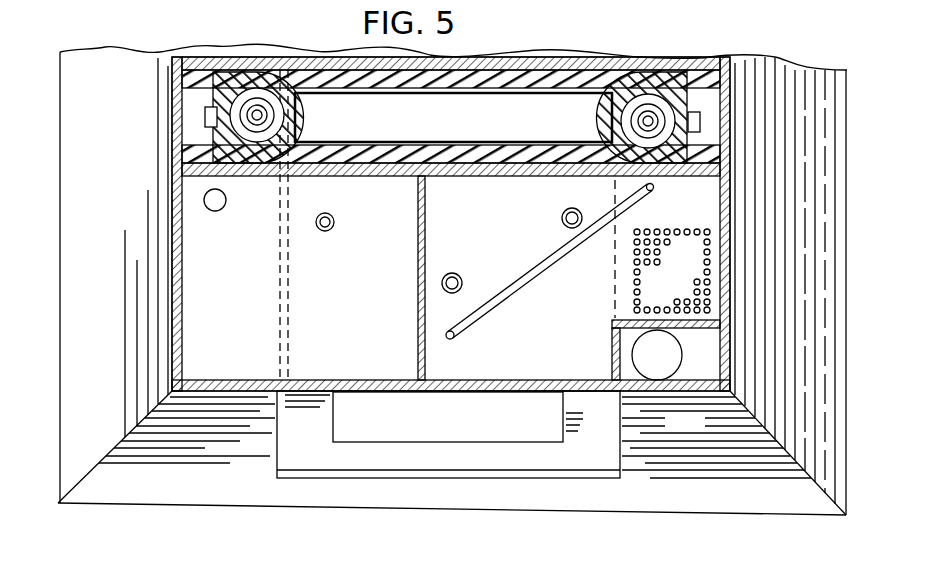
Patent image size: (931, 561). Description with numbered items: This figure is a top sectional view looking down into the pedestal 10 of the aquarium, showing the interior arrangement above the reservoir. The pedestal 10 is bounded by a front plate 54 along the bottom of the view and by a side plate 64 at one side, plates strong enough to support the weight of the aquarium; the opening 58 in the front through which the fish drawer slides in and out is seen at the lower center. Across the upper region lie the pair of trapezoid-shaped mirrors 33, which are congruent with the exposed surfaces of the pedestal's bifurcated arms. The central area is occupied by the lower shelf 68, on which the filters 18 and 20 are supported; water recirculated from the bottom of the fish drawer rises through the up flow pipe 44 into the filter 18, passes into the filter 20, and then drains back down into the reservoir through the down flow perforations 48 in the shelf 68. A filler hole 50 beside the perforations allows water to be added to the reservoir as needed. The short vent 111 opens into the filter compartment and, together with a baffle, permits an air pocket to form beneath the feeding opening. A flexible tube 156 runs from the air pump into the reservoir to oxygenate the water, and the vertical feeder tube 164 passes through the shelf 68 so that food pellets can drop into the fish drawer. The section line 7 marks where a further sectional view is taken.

The section line 7- 7 is at (237, 113).
The pedestal 10 is at (695, 494).
The filter 18 is at (202, 320).
The filter 20 is at (587, 370).
The mirrors 33 is at (360, 72).
The up flow pipe 44 is at (326, 232).
The down flow perforations 48 is at (686, 229).
The filler hole 50 is at (658, 375).
The front plate 54 is at (170, 487).
The opening 58 is at (283, 443).
The side plate 64 is at (70, 427).
The lower shelf 68 is at (197, 243).
The short vent 111 is at (565, 210).
The flexible tube 156 is at (530, 268).
The feeder tube 164 is at (455, 272).